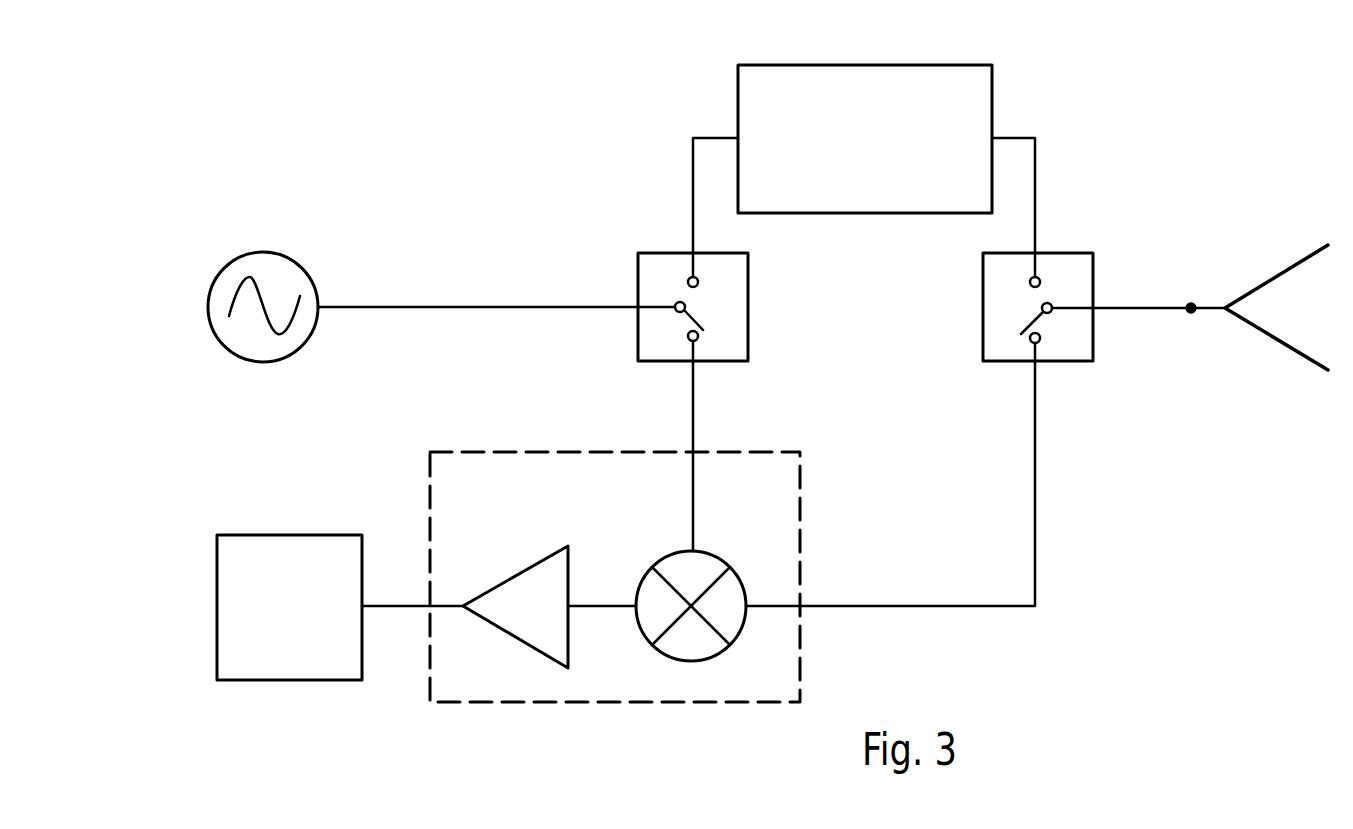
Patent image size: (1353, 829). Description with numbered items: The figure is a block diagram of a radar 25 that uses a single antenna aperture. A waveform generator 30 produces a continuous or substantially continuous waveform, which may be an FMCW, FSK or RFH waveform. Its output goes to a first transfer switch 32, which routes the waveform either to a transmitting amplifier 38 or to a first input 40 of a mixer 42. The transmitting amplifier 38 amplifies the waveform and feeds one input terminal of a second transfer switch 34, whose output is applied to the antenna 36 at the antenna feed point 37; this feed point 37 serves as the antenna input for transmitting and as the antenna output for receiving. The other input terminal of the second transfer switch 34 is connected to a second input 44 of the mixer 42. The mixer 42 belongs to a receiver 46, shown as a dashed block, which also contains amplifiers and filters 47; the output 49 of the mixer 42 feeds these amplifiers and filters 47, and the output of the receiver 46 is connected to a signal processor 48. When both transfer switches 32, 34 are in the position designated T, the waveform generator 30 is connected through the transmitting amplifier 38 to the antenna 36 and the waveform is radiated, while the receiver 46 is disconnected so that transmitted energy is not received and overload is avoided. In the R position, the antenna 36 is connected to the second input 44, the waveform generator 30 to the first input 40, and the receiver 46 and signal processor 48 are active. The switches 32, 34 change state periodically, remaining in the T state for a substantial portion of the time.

The radar 25 is at (257, 131).
The waveform generator 30 is at (243, 253).
The first transfer switch 32 is at (748, 300).
The second transfer switch 34 is at (983, 307).
The antenna 36 is at (1283, 270).
The antenna feed point 37 is at (1193, 288).
The transmitting amplifier 38 is at (738, 95).
The first input of the mixer 40 is at (692, 500).
The mixer 42 is at (665, 558).
The second input of the mixer 44 is at (755, 608).
The receiver 46 is at (800, 515).
The amplifiers and filters 47 is at (550, 556).
The signal processor 48 is at (258, 535).
The output of the mixer 49 is at (600, 608).